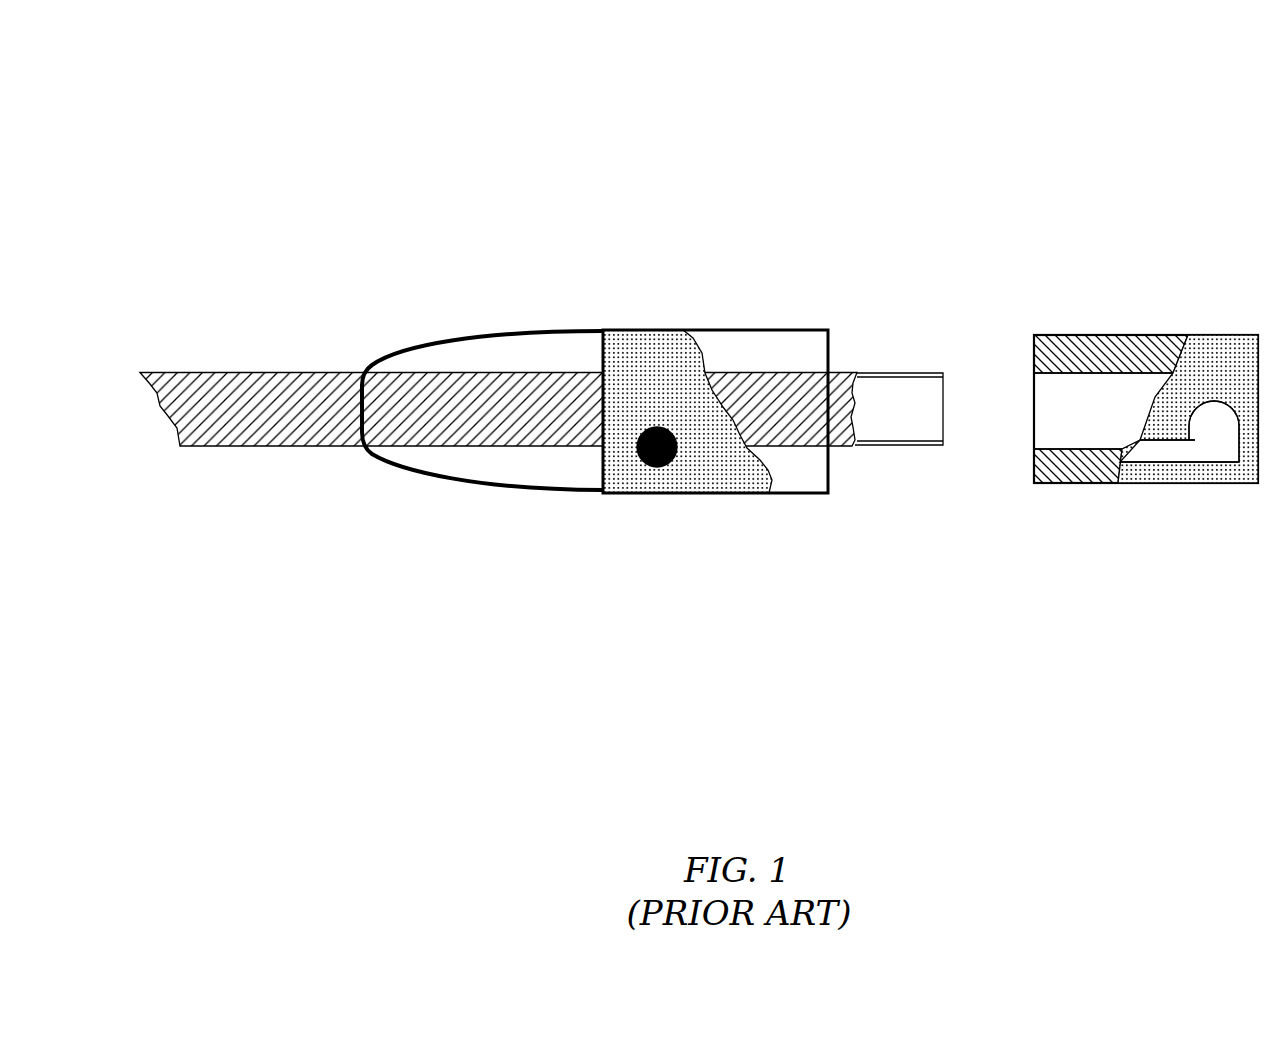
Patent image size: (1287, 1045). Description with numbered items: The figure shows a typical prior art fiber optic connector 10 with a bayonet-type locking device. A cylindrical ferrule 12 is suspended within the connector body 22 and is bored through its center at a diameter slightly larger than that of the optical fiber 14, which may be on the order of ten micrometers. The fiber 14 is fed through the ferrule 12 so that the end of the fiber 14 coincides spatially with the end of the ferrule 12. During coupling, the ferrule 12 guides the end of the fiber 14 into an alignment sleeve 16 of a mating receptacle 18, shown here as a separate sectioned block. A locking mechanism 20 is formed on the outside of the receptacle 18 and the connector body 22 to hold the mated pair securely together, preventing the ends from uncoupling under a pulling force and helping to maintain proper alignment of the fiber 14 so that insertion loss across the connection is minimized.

The fiber optic connector 10 is at (729, 40).
The ferrule 12 is at (840, 370).
The fiber 14 is at (944, 404).
The alignment sleeve 16 is at (1072, 413).
The mating receptacle 18 is at (1208, 334).
The locking mechanism 20 is at (676, 465).
The connector body 22 is at (603, 330).